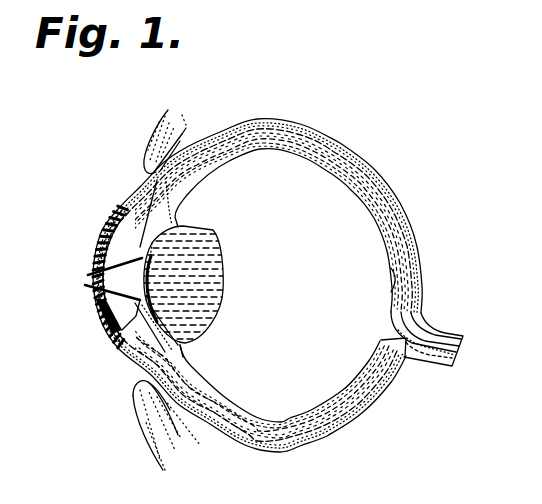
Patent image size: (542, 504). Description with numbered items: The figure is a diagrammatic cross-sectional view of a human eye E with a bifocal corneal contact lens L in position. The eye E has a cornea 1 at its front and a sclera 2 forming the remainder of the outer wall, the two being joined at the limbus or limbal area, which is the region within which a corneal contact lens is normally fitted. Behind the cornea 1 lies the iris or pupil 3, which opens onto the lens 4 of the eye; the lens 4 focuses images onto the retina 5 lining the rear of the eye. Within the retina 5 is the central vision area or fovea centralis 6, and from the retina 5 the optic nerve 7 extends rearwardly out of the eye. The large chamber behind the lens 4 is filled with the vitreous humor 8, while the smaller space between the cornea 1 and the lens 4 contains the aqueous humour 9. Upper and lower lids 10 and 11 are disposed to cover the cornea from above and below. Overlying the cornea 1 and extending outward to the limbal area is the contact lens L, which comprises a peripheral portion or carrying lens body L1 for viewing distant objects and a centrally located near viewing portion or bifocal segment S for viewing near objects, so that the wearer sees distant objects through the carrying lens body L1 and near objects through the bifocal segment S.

The cornea 1 is at (107, 234).
The sclera 2 is at (160, 183).
The iris or pupil 3 is at (100, 290).
The lens 4 is at (217, 253).
The retina 5 is at (367, 202).
The fovea centralis 6 is at (397, 280).
The optic nerve 7 is at (438, 326).
The vitreous humor 8 is at (297, 348).
The aqueous humour 9 is at (135, 320).
The upper lid 10 is at (163, 143).
The lower lid 11 is at (143, 403).
The bifocal segment S is at (98, 295).
The bifocal corneal contact lens L is at (86, 322).
The carrying lens body L1 is at (100, 335).
The human eye E is at (322, 122).